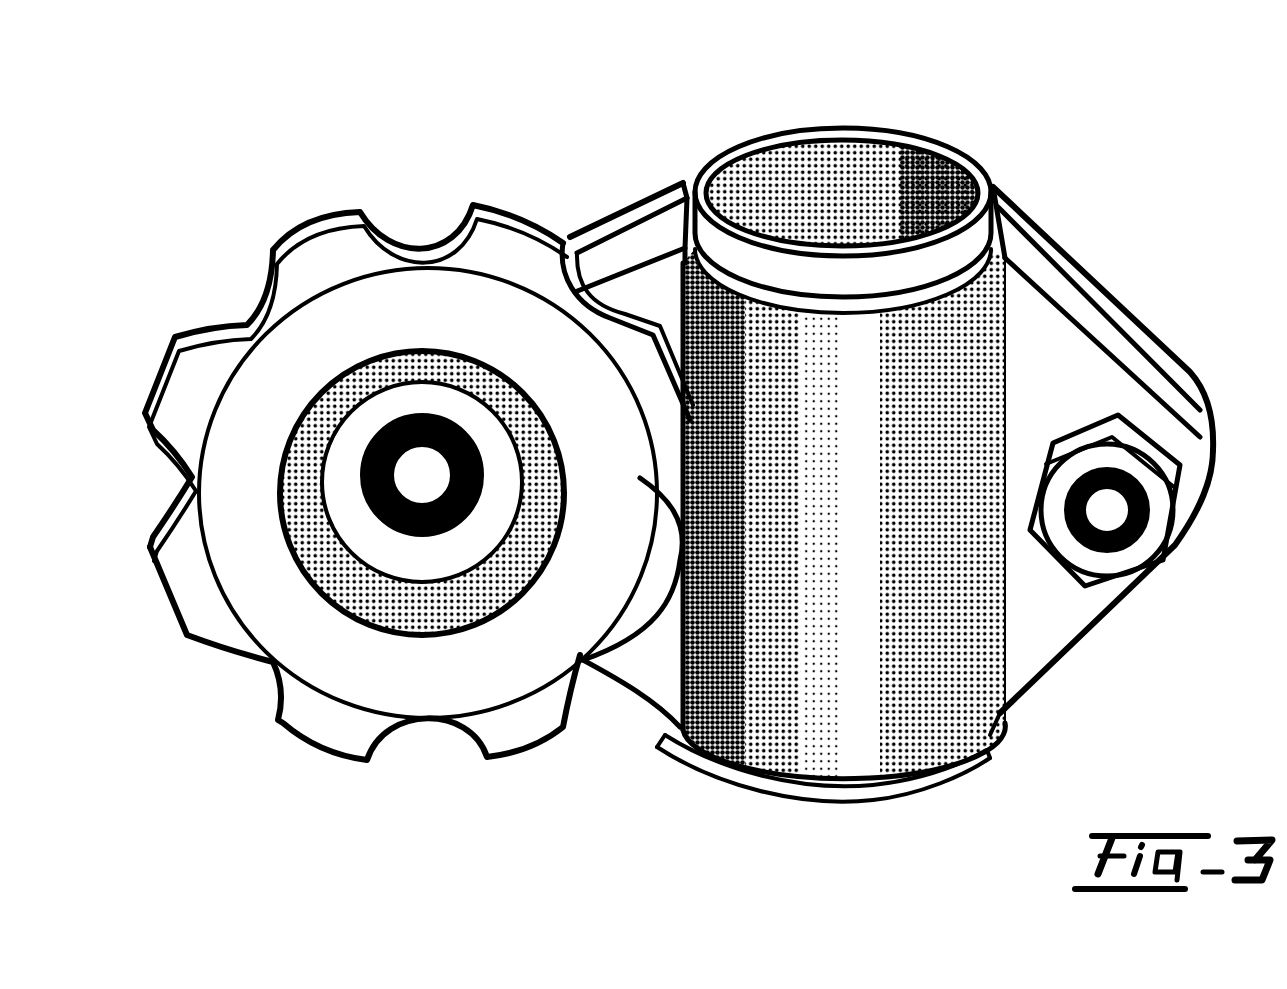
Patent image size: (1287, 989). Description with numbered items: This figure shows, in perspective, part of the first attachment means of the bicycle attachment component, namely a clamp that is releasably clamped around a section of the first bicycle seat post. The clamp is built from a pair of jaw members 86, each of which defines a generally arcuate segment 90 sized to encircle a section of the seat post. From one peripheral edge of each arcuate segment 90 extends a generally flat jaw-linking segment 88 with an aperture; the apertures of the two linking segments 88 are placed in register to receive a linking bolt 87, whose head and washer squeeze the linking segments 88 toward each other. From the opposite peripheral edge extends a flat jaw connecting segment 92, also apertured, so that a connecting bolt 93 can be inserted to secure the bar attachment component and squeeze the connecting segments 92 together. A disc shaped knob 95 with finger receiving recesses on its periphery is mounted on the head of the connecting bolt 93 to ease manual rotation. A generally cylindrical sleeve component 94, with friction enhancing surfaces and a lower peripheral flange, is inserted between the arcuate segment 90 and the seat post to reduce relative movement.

The jaw member 86 is at (1043, 228).
The linking bolt 87 is at (1150, 537).
The jaw-linking segment 88 is at (1070, 360).
The arcuate segment 90 is at (815, 717).
The jaw connecting segment 92 is at (647, 258).
The connecting bolt 93 is at (424, 505).
The sleeve component 94 is at (763, 172).
The knob 95 is at (318, 280).